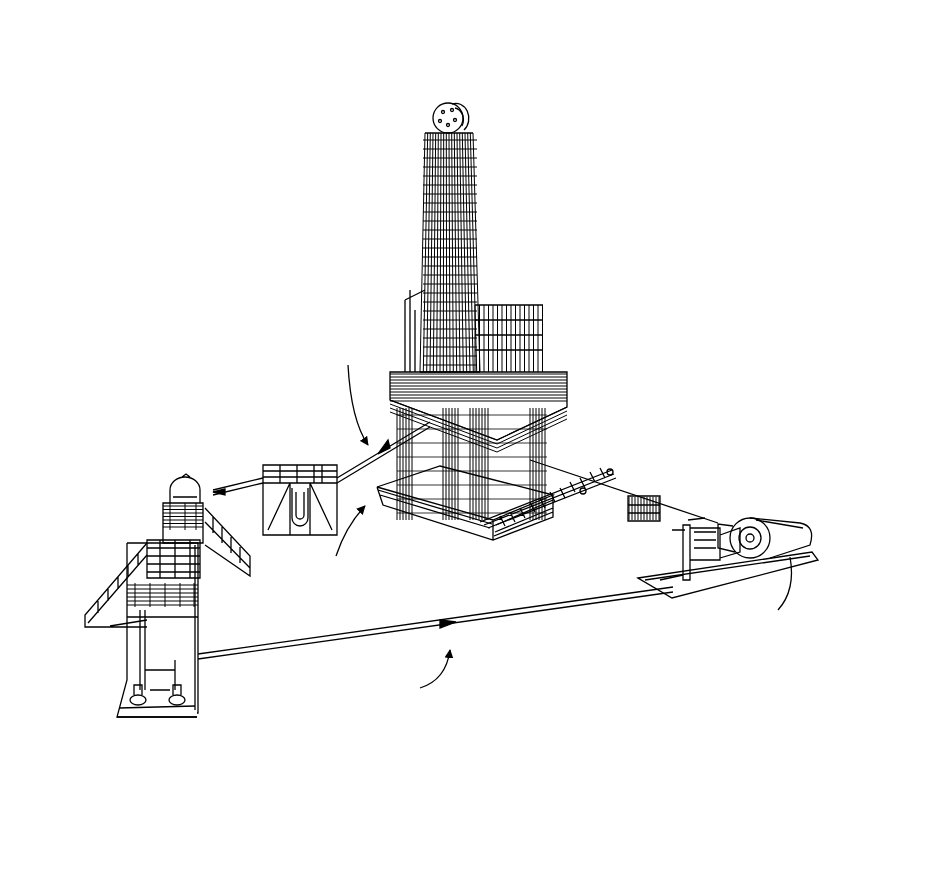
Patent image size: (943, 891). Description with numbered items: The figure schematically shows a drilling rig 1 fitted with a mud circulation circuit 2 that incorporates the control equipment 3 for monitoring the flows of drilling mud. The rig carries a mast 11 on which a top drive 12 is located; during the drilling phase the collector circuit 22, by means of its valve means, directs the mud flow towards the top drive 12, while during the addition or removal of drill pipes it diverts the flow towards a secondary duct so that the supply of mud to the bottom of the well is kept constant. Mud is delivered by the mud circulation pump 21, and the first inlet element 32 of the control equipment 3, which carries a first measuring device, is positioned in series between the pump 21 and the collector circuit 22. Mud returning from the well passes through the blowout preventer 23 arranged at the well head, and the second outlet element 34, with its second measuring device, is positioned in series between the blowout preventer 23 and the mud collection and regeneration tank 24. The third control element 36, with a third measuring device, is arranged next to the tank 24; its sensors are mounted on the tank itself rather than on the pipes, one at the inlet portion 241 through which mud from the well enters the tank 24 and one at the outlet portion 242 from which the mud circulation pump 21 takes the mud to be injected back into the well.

The drilling rig 1 is at (650, 178).
The mud circulation circuit 2 is at (777, 437).
The control equipment 3 is at (264, 306).
The mast 11 is at (435, 202).
The top drive 12 is at (490, 118).
The mud circulation pump 21 is at (790, 560).
The collector circuit 22 is at (572, 355).
The blowout preventer 23 is at (517, 542).
The mud collection and regeneration tank 24 is at (100, 523).
The first inlet element 32 is at (657, 494).
The second outlet element 34 is at (312, 464).
The third control element 36 is at (232, 602).
The inlet portion 241 is at (201, 474).
The outlet portion 242 is at (137, 735).